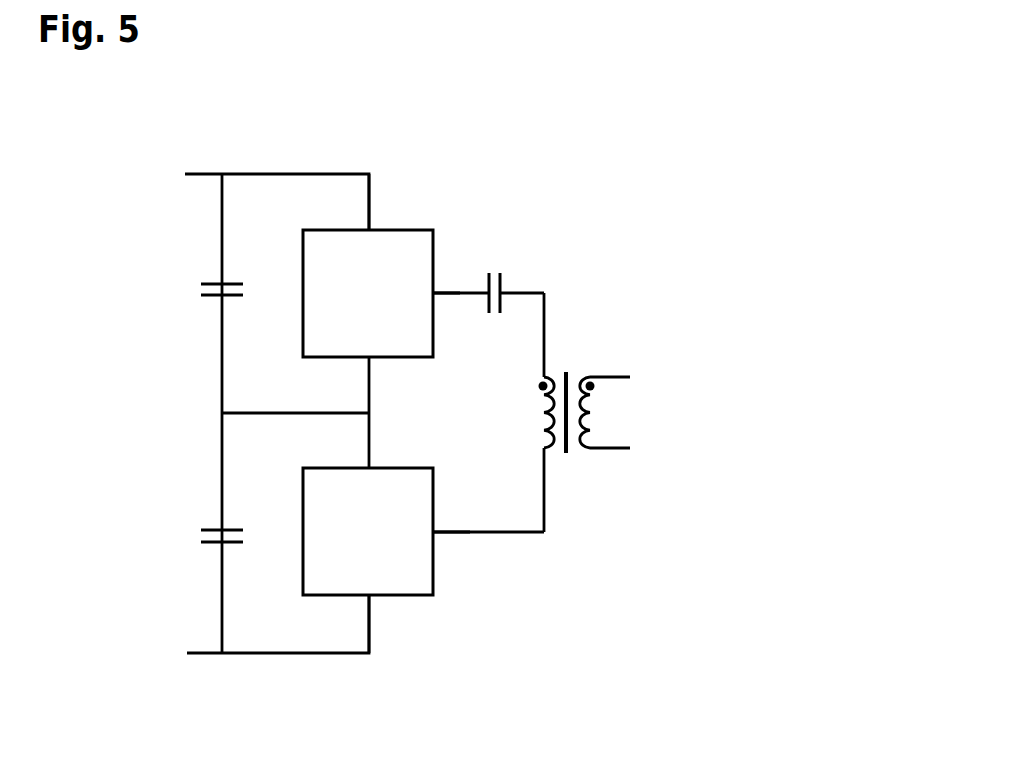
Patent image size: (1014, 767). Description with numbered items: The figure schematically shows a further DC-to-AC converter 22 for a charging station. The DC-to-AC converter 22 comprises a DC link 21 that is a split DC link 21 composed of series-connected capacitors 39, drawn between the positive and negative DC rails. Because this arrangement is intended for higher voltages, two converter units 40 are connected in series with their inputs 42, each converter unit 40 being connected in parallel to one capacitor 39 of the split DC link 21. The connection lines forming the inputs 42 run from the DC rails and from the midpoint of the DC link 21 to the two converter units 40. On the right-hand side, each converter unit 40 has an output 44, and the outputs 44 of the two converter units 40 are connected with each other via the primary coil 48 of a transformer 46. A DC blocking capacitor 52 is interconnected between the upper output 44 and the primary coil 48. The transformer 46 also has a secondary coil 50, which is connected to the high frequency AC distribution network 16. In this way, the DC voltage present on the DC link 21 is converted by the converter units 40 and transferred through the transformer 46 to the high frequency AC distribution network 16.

The high frequency AC distribution network 16 is at (789, 292).
The DC link 21 is at (178, 128).
The DC-to-AC converter 22 is at (660, 145).
The capacitor 39 is at (205, 283).
The converter unit 40 is at (403, 230).
The input 42 is at (368, 200).
The output 44 is at (455, 292).
The transformer 46 is at (625, 430).
The primary coil 48 is at (556, 449).
The secondary coil 50 is at (590, 407).
The DC blocking capacitor 52 is at (508, 290).